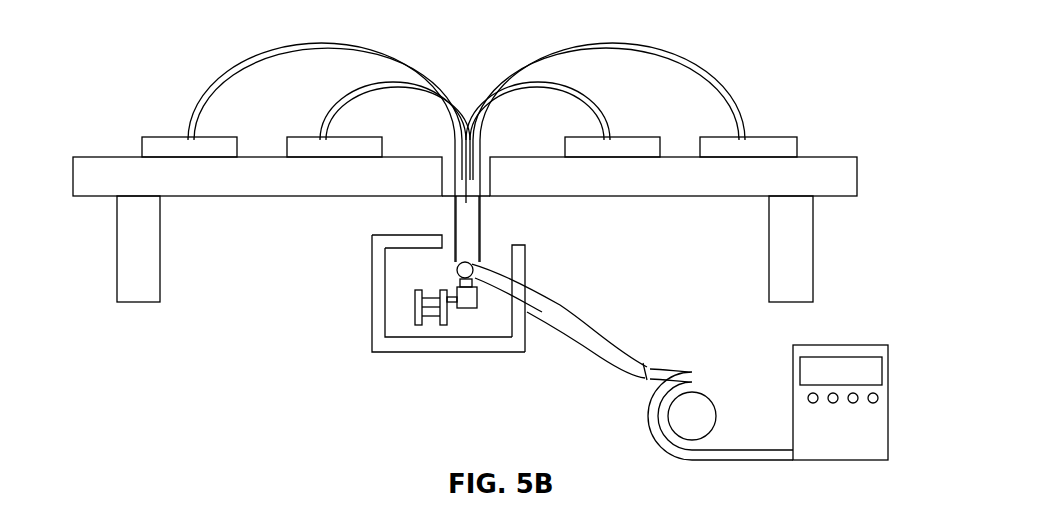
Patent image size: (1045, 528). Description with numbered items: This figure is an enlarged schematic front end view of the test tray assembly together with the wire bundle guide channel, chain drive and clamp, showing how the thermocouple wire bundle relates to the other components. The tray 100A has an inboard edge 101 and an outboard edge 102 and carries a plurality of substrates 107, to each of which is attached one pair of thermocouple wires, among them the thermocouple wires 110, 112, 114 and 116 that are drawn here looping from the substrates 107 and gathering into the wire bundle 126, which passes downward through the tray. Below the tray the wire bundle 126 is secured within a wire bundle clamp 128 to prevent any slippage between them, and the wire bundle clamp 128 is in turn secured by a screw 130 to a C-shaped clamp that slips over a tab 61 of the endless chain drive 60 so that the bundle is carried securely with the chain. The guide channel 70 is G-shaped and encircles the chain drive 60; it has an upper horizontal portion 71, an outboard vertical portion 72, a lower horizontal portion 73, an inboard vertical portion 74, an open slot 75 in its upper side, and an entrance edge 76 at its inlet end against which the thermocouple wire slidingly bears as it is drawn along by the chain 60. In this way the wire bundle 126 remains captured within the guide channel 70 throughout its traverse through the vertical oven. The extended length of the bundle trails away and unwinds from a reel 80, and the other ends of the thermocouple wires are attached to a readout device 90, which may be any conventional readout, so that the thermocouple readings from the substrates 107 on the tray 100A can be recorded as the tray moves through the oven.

The inboard edge 101 is at (73, 181).
The outboard edge 102 is at (858, 170).
The tray 100A is at (848, 183).
The substrates 107 is at (172, 137).
The thermocouple wire 116 is at (278, 50).
The thermocouple wire 110 is at (672, 52).
The thermocouple wire 114 is at (322, 124).
The thermocouple wire 112 is at (606, 124).
The wire bundle 126 is at (470, 213).
The wire bundle clamp 128 is at (460, 258).
The screw 130 is at (473, 279).
The open slot 75 is at (448, 245).
The upper horizontal portion 71 is at (388, 246).
The inboard vertical portion 74 is at (372, 318).
The lower horizontal portion 73 is at (403, 352).
The entrance edge 76 is at (513, 327).
The outboard vertical portion 72 is at (560, 323).
The tab 61 is at (455, 288).
The endless chain drive 60 is at (413, 308).
The reel 80 is at (681, 372).
The readout device 90 is at (863, 345).
The guide channel 70 is at (830, 270).